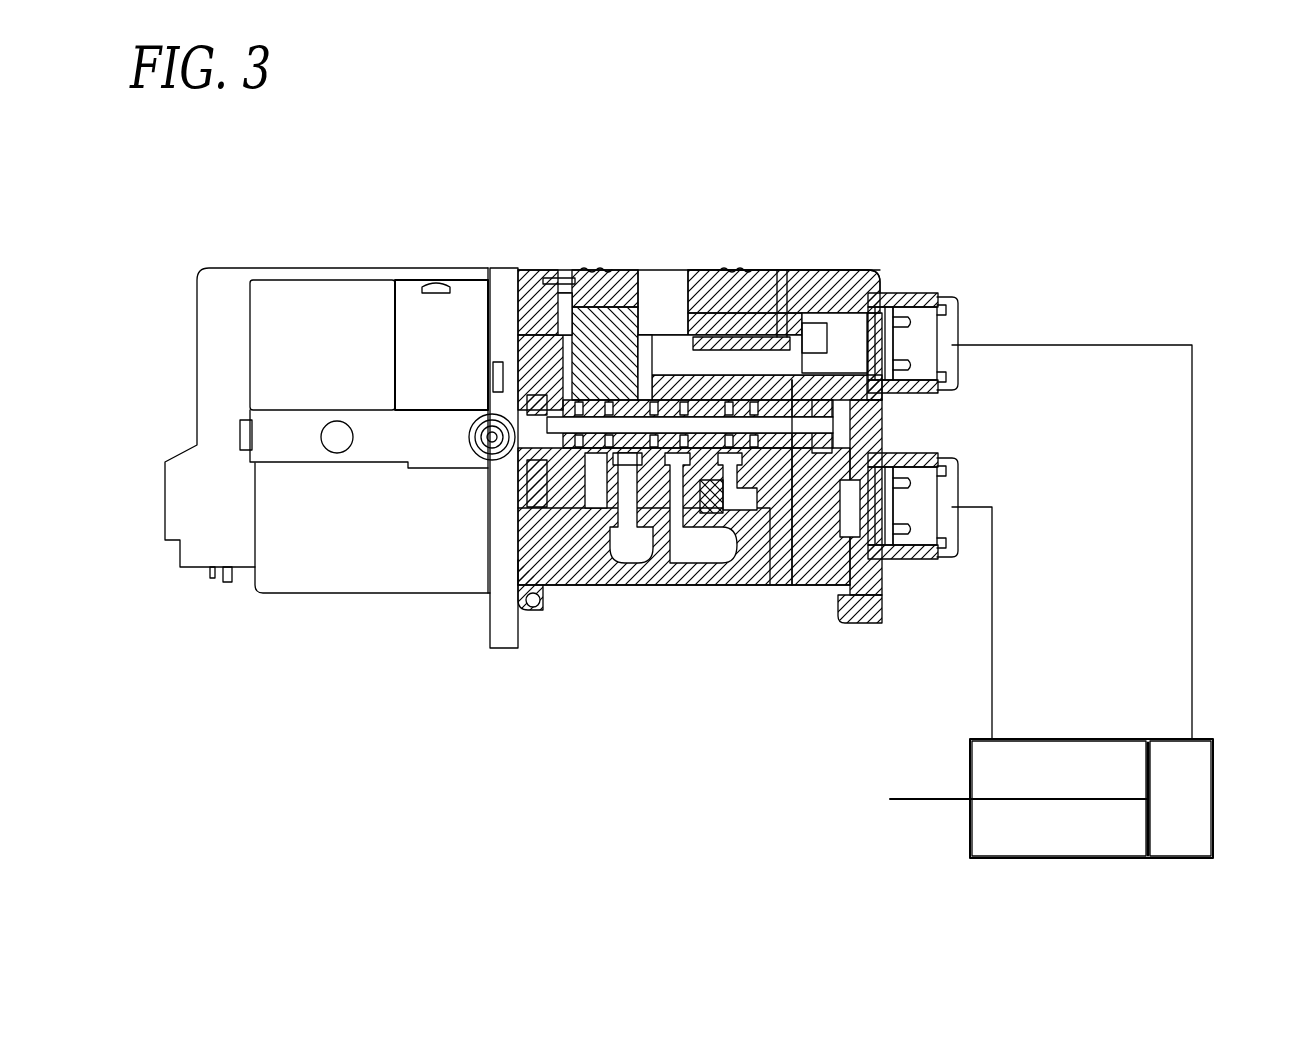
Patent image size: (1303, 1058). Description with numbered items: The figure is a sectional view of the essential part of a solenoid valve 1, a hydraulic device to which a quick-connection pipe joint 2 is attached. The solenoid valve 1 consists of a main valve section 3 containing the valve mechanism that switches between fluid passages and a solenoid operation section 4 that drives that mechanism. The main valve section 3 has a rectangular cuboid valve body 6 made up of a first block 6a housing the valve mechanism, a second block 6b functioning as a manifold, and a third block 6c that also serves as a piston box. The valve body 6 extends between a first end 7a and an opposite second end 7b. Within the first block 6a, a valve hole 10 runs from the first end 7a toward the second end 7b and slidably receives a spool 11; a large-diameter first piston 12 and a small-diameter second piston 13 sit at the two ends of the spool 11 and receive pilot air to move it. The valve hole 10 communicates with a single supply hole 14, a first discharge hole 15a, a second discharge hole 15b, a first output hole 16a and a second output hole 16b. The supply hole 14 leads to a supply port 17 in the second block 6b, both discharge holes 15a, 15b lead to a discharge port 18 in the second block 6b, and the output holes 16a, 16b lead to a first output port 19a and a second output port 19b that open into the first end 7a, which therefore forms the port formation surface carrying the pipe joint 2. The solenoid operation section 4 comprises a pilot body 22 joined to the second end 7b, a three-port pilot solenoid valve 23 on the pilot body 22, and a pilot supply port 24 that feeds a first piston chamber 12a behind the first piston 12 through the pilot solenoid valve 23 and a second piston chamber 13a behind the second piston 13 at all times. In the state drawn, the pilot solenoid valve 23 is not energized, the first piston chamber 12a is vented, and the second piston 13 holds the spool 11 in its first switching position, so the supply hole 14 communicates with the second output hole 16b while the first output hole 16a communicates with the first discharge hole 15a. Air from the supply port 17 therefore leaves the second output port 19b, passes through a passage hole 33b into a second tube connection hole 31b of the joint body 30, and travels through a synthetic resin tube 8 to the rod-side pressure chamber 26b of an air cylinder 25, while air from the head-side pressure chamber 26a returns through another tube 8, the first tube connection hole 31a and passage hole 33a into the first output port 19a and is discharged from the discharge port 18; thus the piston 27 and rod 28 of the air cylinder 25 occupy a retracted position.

The solenoid valve 1 is at (553, 190).
The pipe joint 2 is at (912, 258).
The main valve section 3 is at (659, 243).
The solenoid operation section 4 is at (357, 248).
The valve body 6 is at (722, 256).
The first block 6a is at (600, 352).
The second block 6b is at (552, 578).
The third block 6c is at (533, 300).
The first end 7a is at (803, 330).
The second end 7b is at (520, 318).
The synthetic resin tube 8 is at (1193, 556).
The valve hole 10 is at (700, 342).
The spool 11 is at (631, 390).
The first piston 12 is at (530, 447).
The first piston chamber 12a is at (538, 427).
The second piston 13 is at (787, 497).
The second piston chamber 13a is at (822, 425).
The supply hole 14 is at (657, 543).
The first discharge hole 15a is at (612, 545).
The second discharge hole 15b is at (748, 497).
The first output hole 16a is at (685, 377).
The second output hole 16b is at (717, 497).
The supply port 17 is at (683, 492).
The discharge port 18 is at (620, 500).
The first output port 19a is at (748, 365).
The second output port 19b is at (792, 530).
The pilot body 22 is at (300, 440).
The pilot solenoid valve 23 is at (300, 310).
The pilot supply port 24 is at (493, 437).
The air cylinder 25 is at (1062, 860).
The head-side pressure chamber 26a is at (1177, 822).
The rod-side pressure chamber 26b is at (995, 820).
The piston 27 is at (1147, 825).
The rod 28 is at (916, 802).
The joint body 30 is at (862, 290).
The first tube connection hole 31a is at (935, 334).
The second tube connection hole 31b is at (935, 497).
The passage hole 33a is at (818, 330).
The passage hole 33b is at (863, 560).